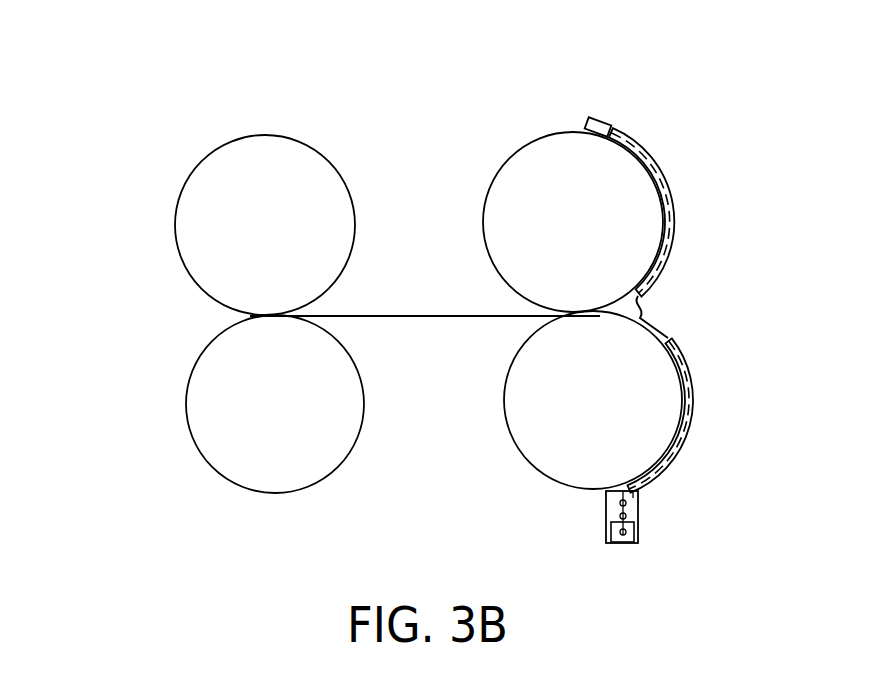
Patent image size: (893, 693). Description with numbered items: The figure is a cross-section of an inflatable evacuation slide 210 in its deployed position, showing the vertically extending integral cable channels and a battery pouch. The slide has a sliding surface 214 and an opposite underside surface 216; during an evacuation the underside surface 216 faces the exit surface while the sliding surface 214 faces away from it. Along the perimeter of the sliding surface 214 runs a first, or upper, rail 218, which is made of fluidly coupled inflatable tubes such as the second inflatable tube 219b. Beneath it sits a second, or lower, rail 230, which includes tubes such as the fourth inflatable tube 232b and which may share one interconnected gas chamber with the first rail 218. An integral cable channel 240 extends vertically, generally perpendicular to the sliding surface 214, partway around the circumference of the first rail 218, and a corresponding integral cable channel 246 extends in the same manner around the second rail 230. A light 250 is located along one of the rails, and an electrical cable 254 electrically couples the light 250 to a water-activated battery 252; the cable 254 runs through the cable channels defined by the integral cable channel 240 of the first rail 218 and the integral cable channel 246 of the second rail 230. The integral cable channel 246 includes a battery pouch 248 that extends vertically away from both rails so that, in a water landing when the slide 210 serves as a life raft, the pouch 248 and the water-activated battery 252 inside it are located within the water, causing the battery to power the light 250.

The inflatable evacuation slide 210 is at (126, 150).
The sliding surface 214 is at (412, 316).
The underside surface 216 is at (395, 317).
The first rail 218 is at (176, 224).
The second rail 230 is at (186, 405).
The second inflatable tube 219b is at (497, 197).
The fourth inflatable tube 232b is at (505, 412).
The integral cable channel 240 is at (675, 218).
The integral cable channel 246 is at (692, 383).
The light 250 is at (598, 120).
The electrical cable 254 is at (641, 318).
The battery pouch 248 is at (606, 500).
The water-activated battery 252 is at (638, 530).